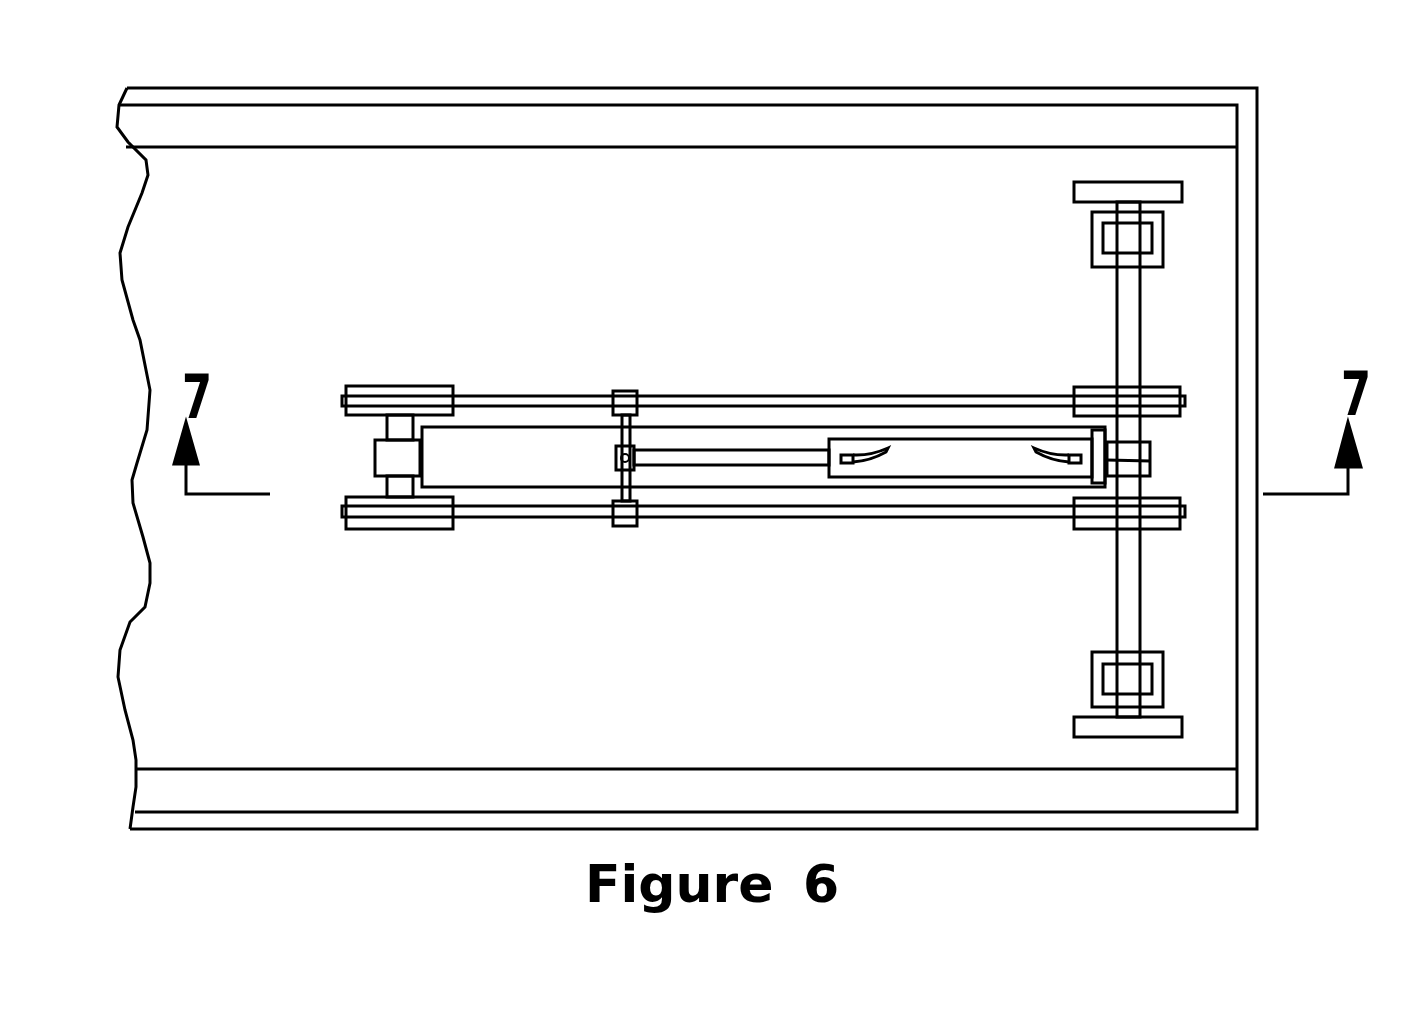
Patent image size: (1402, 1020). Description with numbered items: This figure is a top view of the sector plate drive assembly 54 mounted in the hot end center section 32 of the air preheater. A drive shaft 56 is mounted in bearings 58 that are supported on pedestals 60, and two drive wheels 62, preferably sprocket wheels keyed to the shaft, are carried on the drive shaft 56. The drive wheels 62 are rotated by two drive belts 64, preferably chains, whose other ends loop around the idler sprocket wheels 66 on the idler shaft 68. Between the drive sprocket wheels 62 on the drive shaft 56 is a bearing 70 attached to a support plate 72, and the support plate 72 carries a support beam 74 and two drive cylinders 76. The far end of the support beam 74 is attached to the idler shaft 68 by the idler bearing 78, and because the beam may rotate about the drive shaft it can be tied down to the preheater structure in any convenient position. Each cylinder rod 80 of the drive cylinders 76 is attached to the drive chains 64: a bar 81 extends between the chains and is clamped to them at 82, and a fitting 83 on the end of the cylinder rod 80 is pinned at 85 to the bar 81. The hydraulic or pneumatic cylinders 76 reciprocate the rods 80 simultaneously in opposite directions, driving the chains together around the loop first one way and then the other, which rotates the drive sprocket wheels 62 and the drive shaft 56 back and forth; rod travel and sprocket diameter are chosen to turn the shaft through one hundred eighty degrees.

The hot end center section 32 is at (779, 125).
The drive assembly 54 is at (800, 283).
The drive shaft 56 is at (1140, 575).
The bearings 58 is at (1143, 685).
The pedestals 60 is at (1160, 653).
The drive wheels 62 is at (1165, 386).
The drive belts 64 is at (993, 402).
The idler sprocket wheels 66 is at (413, 386).
The idler shaft 68 is at (387, 430).
The bearing 70 is at (1153, 445).
The support plate 72 is at (1150, 462).
The support beam 74 is at (786, 440).
The drive cylinders 76 is at (912, 455).
The idler bearing 78 is at (380, 468).
The cylinder rods 80 is at (707, 457).
The bar 81 is at (626, 437).
The clamps 82 is at (625, 407).
The fitting 83 is at (617, 470).
The pin 85 is at (620, 455).